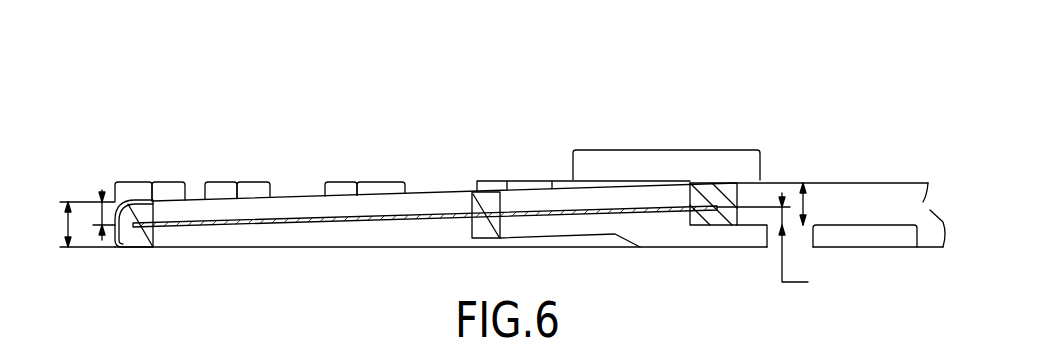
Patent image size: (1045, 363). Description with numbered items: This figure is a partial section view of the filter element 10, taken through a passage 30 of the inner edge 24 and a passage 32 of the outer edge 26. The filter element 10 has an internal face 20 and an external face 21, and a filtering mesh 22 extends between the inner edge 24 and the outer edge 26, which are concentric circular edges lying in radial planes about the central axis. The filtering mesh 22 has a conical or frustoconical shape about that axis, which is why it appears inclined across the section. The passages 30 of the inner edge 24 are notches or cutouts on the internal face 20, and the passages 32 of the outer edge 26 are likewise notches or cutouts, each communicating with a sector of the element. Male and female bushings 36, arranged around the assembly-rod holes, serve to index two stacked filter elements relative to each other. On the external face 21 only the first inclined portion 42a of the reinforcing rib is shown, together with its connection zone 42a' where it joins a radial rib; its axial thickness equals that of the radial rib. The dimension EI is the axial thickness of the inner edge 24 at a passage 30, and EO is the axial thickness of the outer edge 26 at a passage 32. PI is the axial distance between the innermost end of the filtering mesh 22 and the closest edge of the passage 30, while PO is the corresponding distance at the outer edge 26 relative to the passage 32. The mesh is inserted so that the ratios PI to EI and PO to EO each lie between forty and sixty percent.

The filter element 10 is at (823, 122).
The internal face 20 is at (232, 250).
The external face 21 is at (207, 152).
The filtering mesh 22 is at (432, 212).
The inner edge 24 is at (920, 248).
The outer edge 26 is at (130, 190).
The passages 30 is at (835, 241).
The passages 32 is at (295, 187).
The male and female bushings 36 is at (643, 165).
The first inclined portion 42a is at (490, 184).
The connection zone 42a' is at (583, 265).
The axial thickness of the inner edge EI is at (806, 202).
The axial distance PI is at (762, 237).
The axial distance PO is at (100, 215).
The axial thickness of the outer edge EO is at (71, 224).